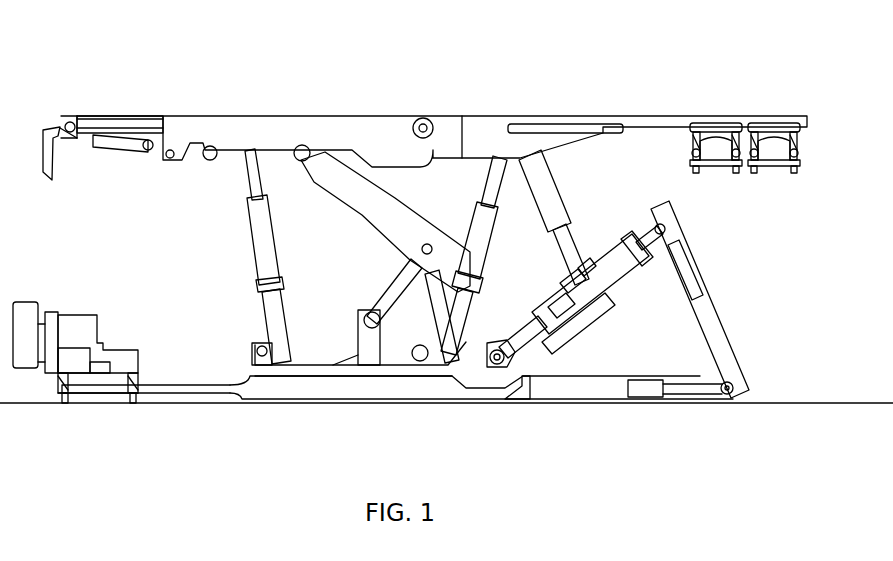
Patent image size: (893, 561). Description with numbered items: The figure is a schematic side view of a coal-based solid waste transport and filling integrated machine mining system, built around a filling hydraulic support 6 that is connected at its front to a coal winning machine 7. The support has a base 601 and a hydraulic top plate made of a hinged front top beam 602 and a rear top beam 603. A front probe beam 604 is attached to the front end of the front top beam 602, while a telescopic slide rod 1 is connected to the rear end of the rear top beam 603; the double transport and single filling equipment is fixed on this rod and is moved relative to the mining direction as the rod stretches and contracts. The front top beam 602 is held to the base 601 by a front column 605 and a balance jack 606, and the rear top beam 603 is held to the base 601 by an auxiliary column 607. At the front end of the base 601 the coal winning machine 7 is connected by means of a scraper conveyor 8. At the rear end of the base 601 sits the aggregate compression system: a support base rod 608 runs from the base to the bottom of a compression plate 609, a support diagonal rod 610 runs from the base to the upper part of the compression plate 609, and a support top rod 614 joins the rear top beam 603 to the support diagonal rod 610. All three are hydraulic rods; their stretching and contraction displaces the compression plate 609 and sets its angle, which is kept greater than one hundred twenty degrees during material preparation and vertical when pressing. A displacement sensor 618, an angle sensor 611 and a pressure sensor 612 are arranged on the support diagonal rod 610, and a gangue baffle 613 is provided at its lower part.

The telescopic slide rod 1 is at (573, 82).
The filling hydraulic support 6 is at (798, 89).
The coal winning machine 7 is at (75, 375).
The scraper conveyor 8 is at (151, 417).
The base 601 is at (481, 412).
The front top beam 602 is at (434, 99).
The rear top beam 603 is at (507, 94).
The front probe beam 604 is at (109, 105).
The front column 605 is at (240, 257).
The balance jack 606 is at (381, 225).
The auxiliary column 607 is at (397, 302).
The support base rod 608 is at (671, 414).
The compression plate 609 is at (715, 299).
The support diagonal rod 610 is at (549, 393).
The angle sensor 611 is at (544, 288).
The pressure sensor 612 is at (587, 292).
The gangue baffle 613 is at (580, 332).
The support top rod 614 is at (577, 191).
The displacement sensor 618 is at (545, 252).